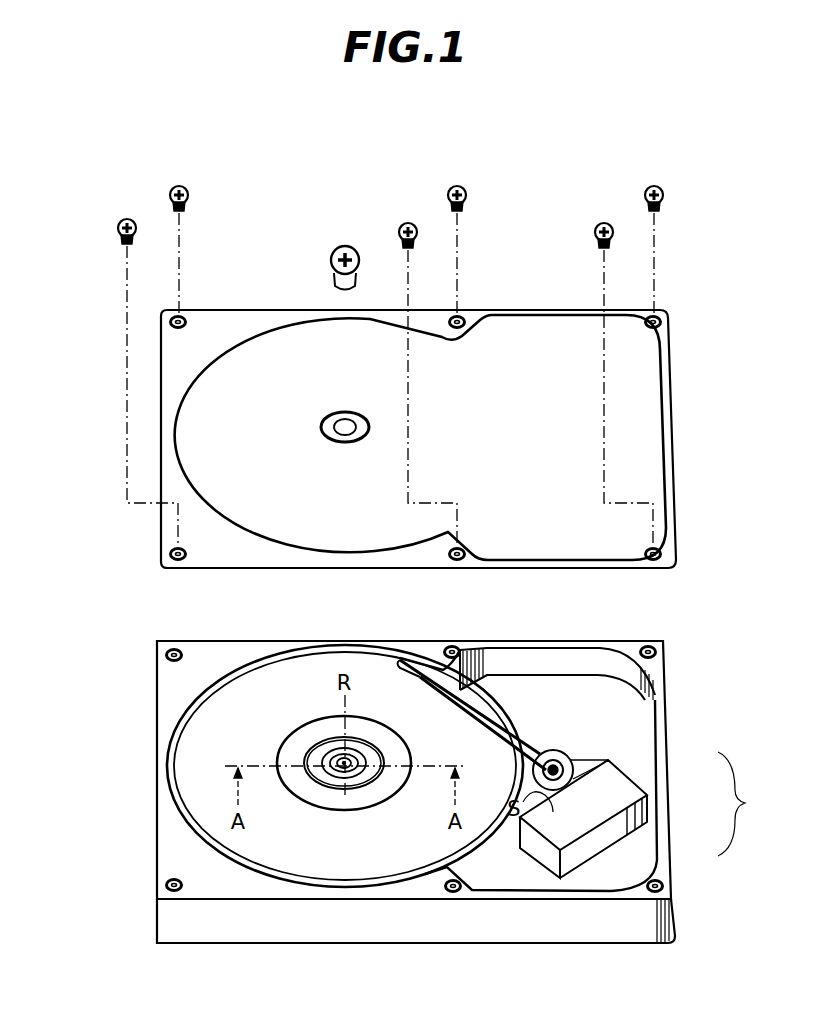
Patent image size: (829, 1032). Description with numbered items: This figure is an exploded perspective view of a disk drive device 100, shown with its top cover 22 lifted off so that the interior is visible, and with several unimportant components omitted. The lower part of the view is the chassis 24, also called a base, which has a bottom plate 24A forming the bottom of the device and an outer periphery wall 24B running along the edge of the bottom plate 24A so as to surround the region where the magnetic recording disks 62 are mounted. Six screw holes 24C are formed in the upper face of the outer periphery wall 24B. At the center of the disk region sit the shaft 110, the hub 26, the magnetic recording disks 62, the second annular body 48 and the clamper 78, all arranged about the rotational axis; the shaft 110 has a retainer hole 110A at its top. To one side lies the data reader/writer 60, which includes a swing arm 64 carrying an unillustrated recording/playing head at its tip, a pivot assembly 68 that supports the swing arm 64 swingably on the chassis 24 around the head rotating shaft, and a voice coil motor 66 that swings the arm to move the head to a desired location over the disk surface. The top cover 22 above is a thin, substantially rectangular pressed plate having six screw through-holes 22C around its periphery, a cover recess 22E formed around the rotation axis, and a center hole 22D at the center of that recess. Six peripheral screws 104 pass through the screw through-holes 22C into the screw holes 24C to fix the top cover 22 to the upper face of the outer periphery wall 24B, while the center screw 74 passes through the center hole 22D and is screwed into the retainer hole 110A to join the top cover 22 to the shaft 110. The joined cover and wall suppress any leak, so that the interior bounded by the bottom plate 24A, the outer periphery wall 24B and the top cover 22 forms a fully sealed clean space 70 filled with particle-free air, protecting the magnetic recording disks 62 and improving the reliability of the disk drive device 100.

The disk drive device 100 is at (722, 982).
The top cover 22 is at (643, 390).
The screw through-holes 22C is at (183, 318).
The center hole 22D is at (352, 432).
The cover recess 22E is at (330, 432).
The chassis 24 is at (548, 917).
The bottom plate 24A is at (607, 735).
The outer periphery wall 24B is at (662, 723).
The screw holes 24C is at (165, 657).
The hub 26 is at (310, 748).
The second annular body 48 is at (322, 753).
The data reader/writer 60 is at (745, 804).
The magnetic recording disks 62 is at (243, 710).
The swing arm 64 is at (497, 725).
The voice coil motor 66 is at (587, 810).
The pivot assembly 68 is at (652, 803).
The clean space 70 is at (537, 698).
The center screw 74 is at (330, 258).
The clamper 78 is at (287, 753).
The peripheral screws 104 is at (118, 228).
The shaft 110 is at (348, 772).
The retainer hole 110A is at (342, 772).